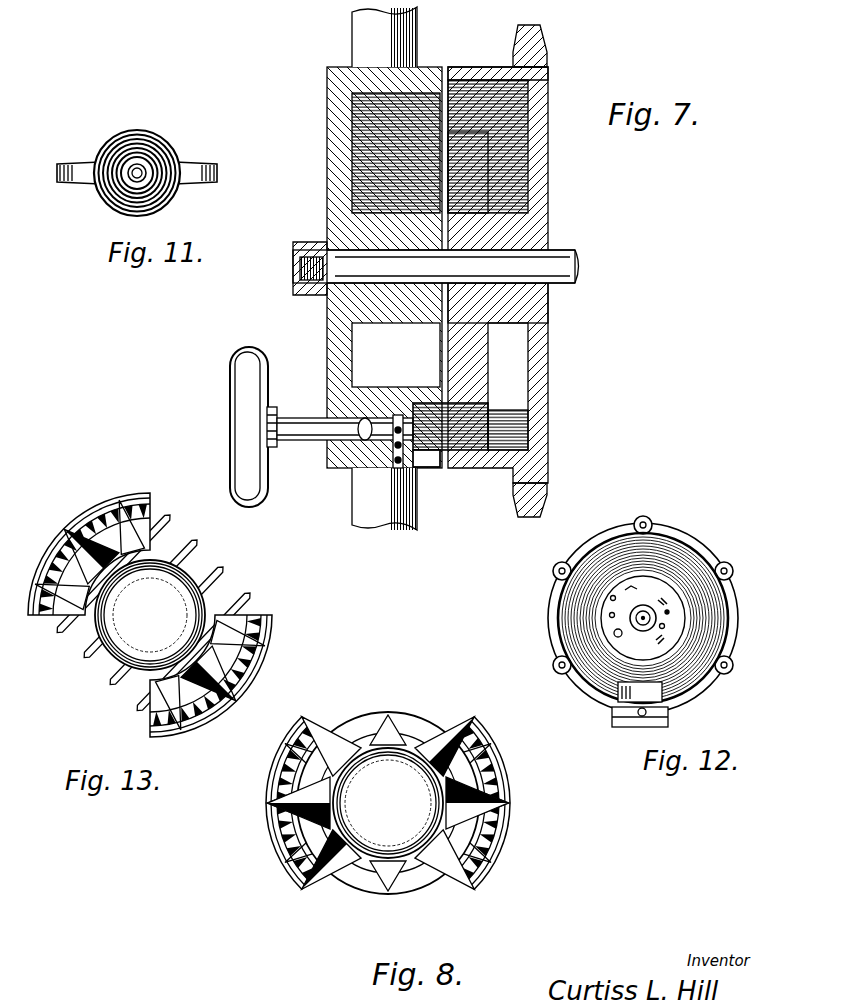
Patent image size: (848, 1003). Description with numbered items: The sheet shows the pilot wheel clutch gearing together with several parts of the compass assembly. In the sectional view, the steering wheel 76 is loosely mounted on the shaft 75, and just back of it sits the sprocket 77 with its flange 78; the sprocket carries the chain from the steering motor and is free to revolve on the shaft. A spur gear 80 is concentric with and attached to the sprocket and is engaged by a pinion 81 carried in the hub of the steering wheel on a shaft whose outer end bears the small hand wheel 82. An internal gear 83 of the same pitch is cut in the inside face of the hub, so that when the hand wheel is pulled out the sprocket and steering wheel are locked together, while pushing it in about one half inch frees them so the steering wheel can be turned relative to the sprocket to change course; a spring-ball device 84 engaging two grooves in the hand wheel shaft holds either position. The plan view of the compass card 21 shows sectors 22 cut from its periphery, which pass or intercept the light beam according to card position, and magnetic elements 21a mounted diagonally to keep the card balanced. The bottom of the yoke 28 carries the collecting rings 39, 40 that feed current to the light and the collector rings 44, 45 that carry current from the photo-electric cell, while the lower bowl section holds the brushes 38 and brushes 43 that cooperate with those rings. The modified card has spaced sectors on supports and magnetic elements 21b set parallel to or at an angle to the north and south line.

In FIG. 7, the shaft 75 is at (568, 253).
In FIG. 7, the steering wheel 76 is at (360, 50).
In FIG. 7, the sprocket 77 is at (542, 180).
In FIG. 7, the flange 78 is at (472, 76).
In FIG. 7, the spur gear 80 is at (480, 360).
In FIG. 7, the pinion 81 is at (467, 442).
In FIG. 7, the hand wheel 82 is at (302, 418).
In FIG. 7, the internal gear 83 is at (428, 452).
In FIG. 7, the spring-ball device 84 is at (393, 447).
In FIG. 11, the yoke 28 is at (82, 170).
In FIG. 11, the collecting ring 39 is at (170, 143).
In FIG. 11, the collecting ring 40 is at (177, 146).
In FIG. 11, the collector ring 44 is at (112, 187).
In FIG. 11, the collector ring 45 is at (120, 190).
In FIG. 8, the magnetic compass card 21 is at (388, 791).
In FIG. 8, the magnetic elements 21a is at (420, 880).
In FIG. 13, the magnetic elements 21b is at (66, 640).
In FIG. 8, the sectors 22 is at (498, 772).
In FIG. 12, the brushes 38 is at (611, 600).
In FIG. 12, the brushes 43 is at (665, 626).